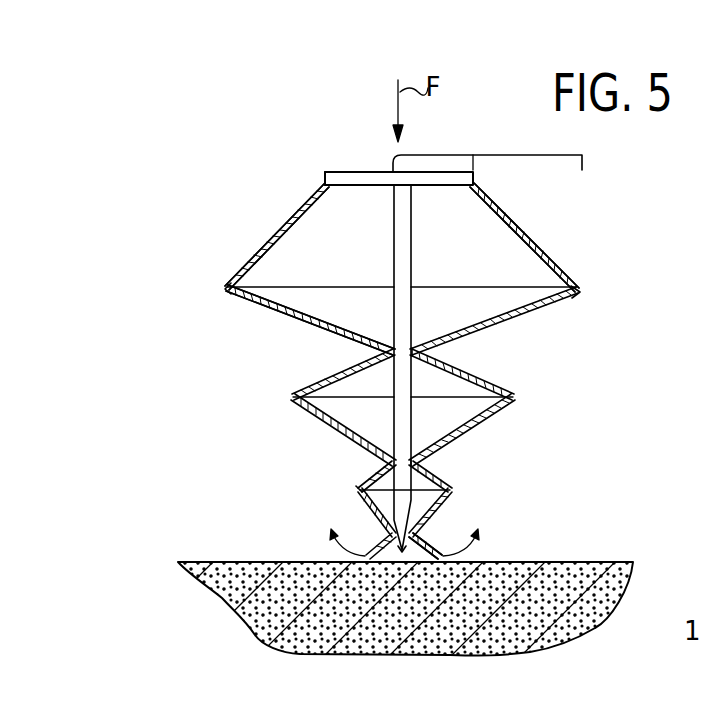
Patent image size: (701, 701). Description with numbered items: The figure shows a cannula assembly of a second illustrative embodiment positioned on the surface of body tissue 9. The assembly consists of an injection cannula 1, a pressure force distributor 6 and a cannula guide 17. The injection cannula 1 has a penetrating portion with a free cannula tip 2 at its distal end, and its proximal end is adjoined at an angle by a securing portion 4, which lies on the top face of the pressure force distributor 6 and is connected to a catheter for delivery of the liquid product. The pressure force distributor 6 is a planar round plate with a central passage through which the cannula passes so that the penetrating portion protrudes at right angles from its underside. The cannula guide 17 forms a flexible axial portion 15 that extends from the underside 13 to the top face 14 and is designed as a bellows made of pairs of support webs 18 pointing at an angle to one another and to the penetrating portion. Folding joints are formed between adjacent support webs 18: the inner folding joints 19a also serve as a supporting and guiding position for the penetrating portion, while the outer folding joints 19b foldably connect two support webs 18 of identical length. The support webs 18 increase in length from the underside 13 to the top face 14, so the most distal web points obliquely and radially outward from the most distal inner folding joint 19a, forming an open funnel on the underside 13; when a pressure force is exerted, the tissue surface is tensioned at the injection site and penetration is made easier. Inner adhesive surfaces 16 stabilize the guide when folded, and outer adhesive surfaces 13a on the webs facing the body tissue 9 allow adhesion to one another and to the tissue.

The injection cannula 1 is at (405, 415).
The cannula tip 2 is at (395, 555).
The securing portion 4 is at (443, 160).
The pressure force distributor 6 is at (335, 172).
The body tissue 9 is at (245, 603).
The underside 13 is at (445, 560).
The outer adhesive surfaces 13a is at (270, 312).
The top face 14 is at (375, 170).
The flexible axial portion 15 is at (117, 175).
The inner adhesive surfaces 16 is at (528, 292).
The cannula guide 17 is at (290, 280).
The support webs 18 is at (553, 300).
The inner folding joints 19a is at (420, 352).
The outer folding joints 19b is at (227, 289).